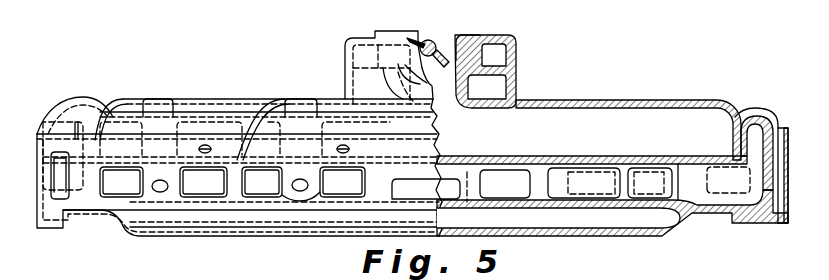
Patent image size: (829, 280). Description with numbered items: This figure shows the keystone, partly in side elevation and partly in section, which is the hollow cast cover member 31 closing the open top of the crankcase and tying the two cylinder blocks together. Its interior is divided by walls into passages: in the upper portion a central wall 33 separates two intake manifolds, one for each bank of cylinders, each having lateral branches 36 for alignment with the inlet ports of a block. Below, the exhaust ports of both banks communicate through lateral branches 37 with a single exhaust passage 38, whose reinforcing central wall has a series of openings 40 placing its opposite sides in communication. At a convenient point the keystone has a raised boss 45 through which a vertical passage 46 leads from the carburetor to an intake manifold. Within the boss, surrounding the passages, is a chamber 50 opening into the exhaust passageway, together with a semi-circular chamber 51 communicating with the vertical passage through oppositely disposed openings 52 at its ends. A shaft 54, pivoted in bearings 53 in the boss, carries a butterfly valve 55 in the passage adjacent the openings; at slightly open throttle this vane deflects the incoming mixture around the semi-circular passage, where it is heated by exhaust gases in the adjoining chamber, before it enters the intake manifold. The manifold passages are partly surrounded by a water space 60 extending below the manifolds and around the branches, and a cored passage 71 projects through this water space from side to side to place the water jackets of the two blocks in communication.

The cover member 31 is at (687, 103).
The central wall 33 is at (612, 117).
The lateral branch 36 is at (191, 182).
The lateral branch 37 is at (272, 182).
The exhaust passage 38 is at (541, 193).
The openings 40 is at (622, 192).
The raised boss 45 is at (516, 70).
The vertical passage 46 is at (429, 85).
The chamber 50 is at (487, 87).
The semi-circular chamber 51 is at (494, 55).
The openings 52 is at (459, 46).
The bearings 53 is at (417, 36).
The shaft 54 is at (433, 40).
The butterfly valve 55 is at (449, 58).
The water space 60 is at (558, 218).
The cored passage 71 is at (60, 175).